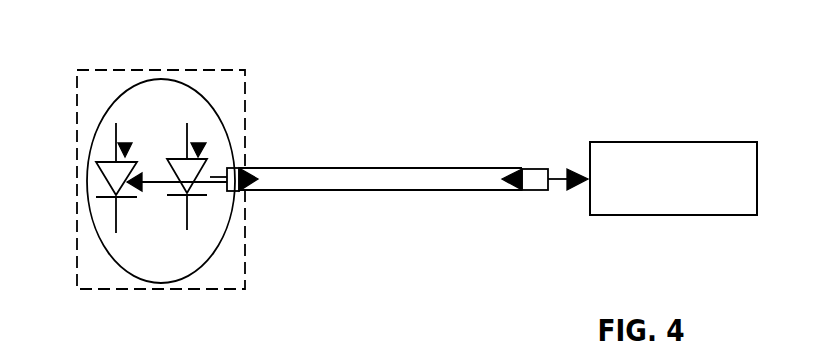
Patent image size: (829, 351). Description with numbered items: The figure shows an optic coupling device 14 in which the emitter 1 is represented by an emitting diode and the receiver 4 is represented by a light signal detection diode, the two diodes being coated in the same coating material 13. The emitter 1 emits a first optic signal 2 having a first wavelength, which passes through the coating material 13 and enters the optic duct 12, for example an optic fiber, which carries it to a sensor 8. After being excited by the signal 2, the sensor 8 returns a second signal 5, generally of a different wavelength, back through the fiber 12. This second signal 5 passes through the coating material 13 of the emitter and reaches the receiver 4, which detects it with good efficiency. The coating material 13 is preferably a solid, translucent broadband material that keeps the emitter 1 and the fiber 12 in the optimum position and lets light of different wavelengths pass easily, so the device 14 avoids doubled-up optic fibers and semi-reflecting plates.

The emitter 1 is at (199, 143).
The first optic signal 2 is at (250, 168).
The receiver 4 is at (162, 79).
The second signal 5 is at (125, 143).
The sensor 8 is at (717, 142).
The optic duct 12 is at (359, 191).
The coating material 13 is at (236, 145).
The optic coupling device 14 is at (238, 257).